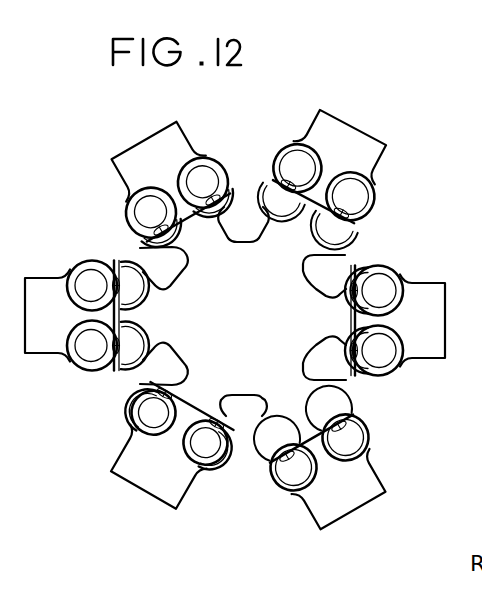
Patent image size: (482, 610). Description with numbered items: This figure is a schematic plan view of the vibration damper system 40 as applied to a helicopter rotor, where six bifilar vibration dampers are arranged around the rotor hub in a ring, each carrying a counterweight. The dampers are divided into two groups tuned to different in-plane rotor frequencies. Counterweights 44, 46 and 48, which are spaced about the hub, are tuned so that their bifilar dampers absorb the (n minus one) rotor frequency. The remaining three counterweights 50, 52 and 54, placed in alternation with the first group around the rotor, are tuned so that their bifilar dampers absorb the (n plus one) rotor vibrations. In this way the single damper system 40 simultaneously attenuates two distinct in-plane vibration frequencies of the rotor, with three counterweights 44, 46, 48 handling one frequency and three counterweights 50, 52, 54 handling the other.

The assembly of connected spring clip elements 40 is at (375, 103).
The counterweight 44 is at (433, 295).
The counterweight 46 is at (150, 148).
The counterweight 48 is at (152, 483).
The counterweight 50 is at (322, 505).
The counterweight 52 is at (371, 138).
The counterweight 54 is at (50, 292).